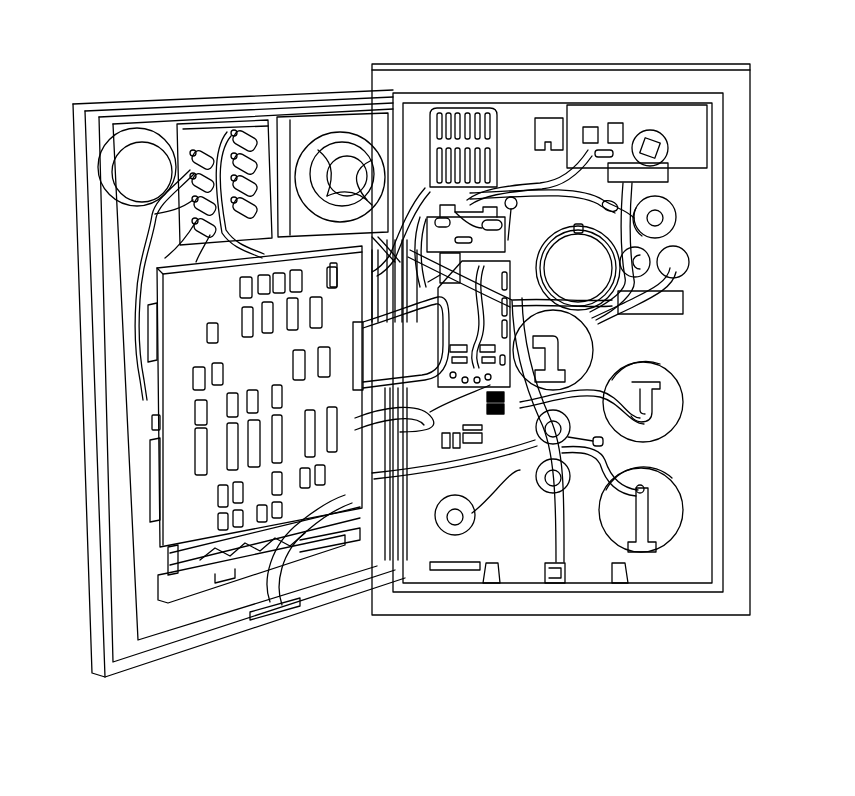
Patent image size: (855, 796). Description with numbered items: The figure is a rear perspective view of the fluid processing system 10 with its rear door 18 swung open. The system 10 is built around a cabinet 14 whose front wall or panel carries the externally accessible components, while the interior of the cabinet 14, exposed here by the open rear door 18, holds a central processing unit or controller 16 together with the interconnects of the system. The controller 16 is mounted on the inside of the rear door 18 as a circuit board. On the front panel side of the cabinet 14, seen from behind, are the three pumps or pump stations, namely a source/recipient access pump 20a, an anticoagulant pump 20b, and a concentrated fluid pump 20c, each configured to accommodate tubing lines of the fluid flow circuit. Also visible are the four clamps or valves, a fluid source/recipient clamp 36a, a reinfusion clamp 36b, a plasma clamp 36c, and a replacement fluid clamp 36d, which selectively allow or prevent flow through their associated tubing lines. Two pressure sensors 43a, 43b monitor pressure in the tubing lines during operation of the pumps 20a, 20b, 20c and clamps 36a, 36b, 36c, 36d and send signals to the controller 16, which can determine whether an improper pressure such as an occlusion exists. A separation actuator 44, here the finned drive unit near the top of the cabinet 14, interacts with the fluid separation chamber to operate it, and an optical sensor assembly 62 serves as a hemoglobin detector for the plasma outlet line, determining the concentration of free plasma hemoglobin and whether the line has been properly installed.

The fluid processing system 10 is at (55, 592).
The cabinet 14 is at (730, 606).
The controller 16 is at (180, 390).
The rear door 18 is at (161, 672).
The source/recipient access pump 20a is at (660, 520).
The anticoagulant pump 20b is at (672, 413).
The concentrated fluid pump 20c is at (565, 368).
The fluid source/recipient clamp 36a is at (572, 440).
The reinfusion clamp 36b is at (572, 478).
The plasma clamp 36c is at (455, 535).
The replacement fluid clamp 36d is at (677, 210).
The pressure sensor 43a is at (684, 268).
The pressure sensor 43b is at (660, 250).
The separation actuator 44 is at (462, 108).
The optical sensor assembly 62 is at (468, 450).